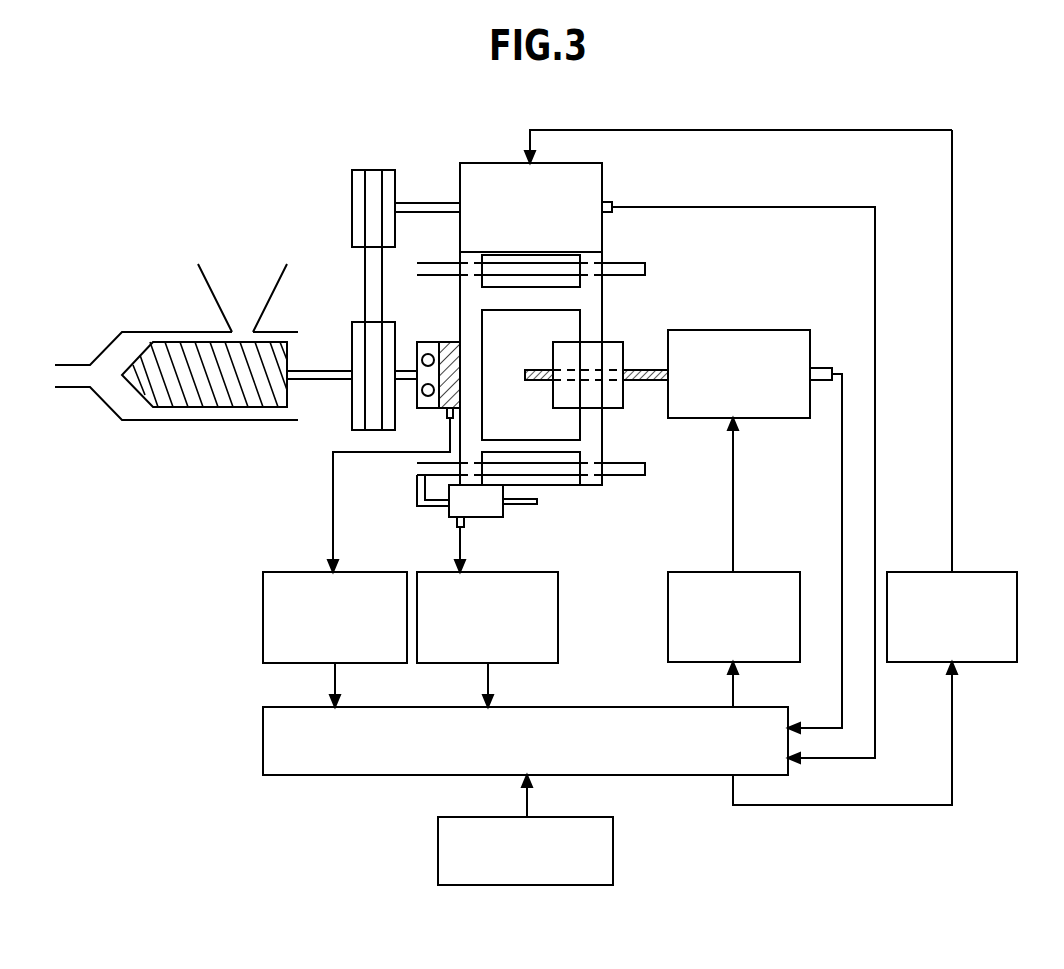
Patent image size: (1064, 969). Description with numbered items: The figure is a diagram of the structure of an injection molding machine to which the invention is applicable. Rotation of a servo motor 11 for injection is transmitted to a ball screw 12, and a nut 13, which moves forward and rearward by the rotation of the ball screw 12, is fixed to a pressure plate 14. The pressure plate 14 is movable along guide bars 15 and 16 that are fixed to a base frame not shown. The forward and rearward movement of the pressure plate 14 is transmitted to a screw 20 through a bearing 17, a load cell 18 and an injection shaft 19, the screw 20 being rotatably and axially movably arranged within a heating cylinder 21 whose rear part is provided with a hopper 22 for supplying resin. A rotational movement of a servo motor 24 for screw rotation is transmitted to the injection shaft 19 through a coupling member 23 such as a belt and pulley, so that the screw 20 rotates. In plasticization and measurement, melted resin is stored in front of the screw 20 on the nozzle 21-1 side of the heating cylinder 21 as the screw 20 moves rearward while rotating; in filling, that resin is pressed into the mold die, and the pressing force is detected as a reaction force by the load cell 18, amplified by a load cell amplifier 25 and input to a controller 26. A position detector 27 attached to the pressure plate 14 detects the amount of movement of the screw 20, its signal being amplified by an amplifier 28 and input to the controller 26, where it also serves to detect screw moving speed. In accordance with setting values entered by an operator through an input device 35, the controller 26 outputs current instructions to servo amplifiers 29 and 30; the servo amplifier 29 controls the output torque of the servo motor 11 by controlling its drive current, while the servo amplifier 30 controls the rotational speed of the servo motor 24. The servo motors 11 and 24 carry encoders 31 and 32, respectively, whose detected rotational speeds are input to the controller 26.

The servo motor for injection 11 is at (742, 330).
The ball screw 12 is at (645, 368).
The nut 13 is at (613, 342).
The pressure plate 14 is at (600, 440).
The guide bar 15 is at (645, 270).
The guide bar 16 is at (645, 469).
The bearing 17 is at (426, 342).
The load cell 18 is at (449, 342).
The injection shaft 19 is at (323, 381).
The screw 20 is at (153, 350).
The heating cylinder 21 is at (90, 360).
The nozzle 21-1 is at (78, 388).
The hopper 22 is at (208, 285).
The coupling member 23 is at (363, 288).
The servo motor for screw rotation 24 is at (602, 178).
The load cell amplifier 25 is at (263, 612).
The controller 26 is at (365, 775).
The position detector 27 is at (490, 517).
The amplifier 28 is at (558, 612).
The servo amplifier 29 is at (668, 612).
The servo amplifier 30 is at (990, 572).
The encoder 31 is at (818, 368).
The encoder 32 is at (612, 213).
The input device 35 is at (613, 845).